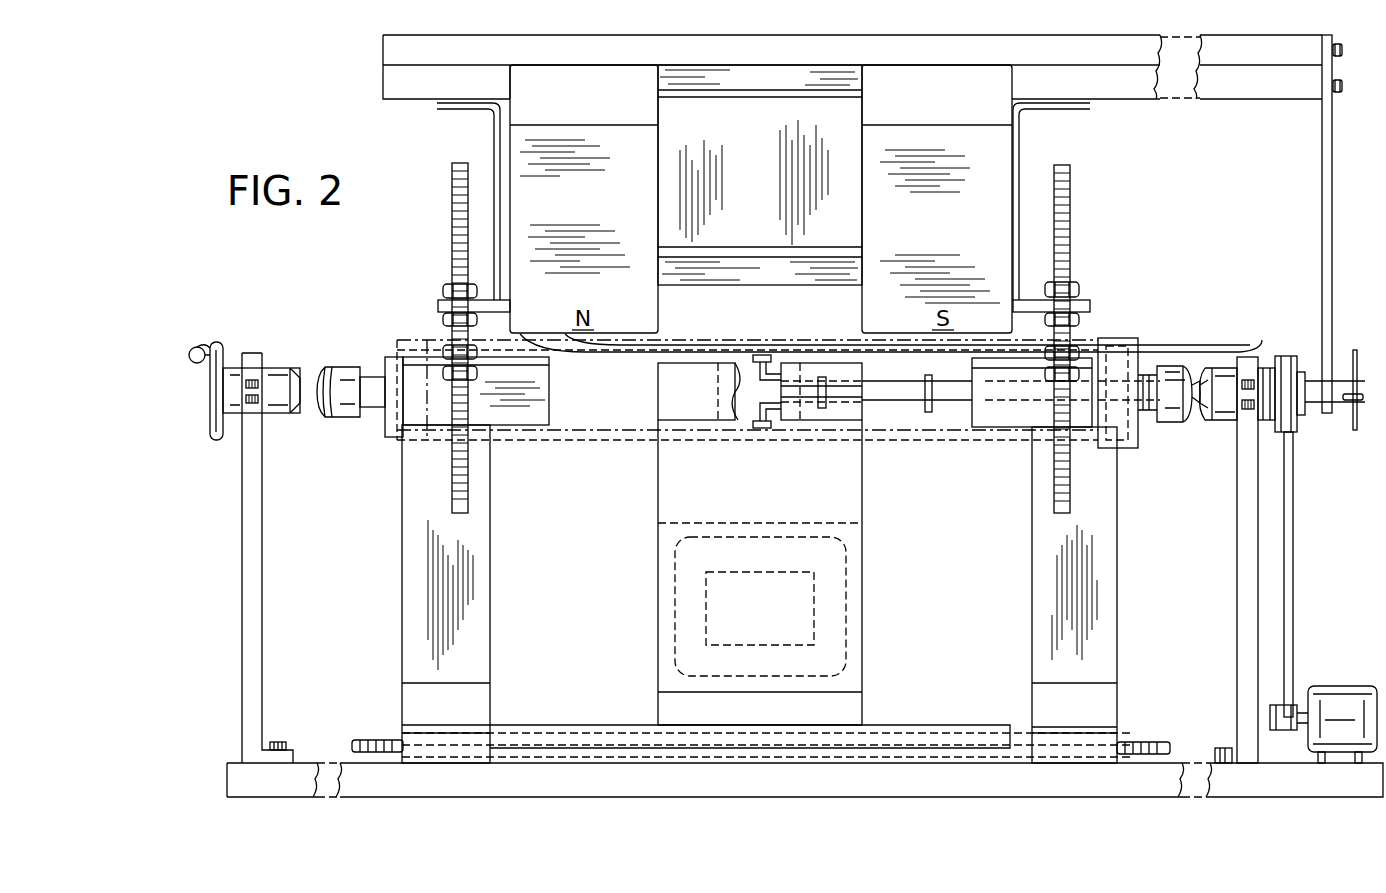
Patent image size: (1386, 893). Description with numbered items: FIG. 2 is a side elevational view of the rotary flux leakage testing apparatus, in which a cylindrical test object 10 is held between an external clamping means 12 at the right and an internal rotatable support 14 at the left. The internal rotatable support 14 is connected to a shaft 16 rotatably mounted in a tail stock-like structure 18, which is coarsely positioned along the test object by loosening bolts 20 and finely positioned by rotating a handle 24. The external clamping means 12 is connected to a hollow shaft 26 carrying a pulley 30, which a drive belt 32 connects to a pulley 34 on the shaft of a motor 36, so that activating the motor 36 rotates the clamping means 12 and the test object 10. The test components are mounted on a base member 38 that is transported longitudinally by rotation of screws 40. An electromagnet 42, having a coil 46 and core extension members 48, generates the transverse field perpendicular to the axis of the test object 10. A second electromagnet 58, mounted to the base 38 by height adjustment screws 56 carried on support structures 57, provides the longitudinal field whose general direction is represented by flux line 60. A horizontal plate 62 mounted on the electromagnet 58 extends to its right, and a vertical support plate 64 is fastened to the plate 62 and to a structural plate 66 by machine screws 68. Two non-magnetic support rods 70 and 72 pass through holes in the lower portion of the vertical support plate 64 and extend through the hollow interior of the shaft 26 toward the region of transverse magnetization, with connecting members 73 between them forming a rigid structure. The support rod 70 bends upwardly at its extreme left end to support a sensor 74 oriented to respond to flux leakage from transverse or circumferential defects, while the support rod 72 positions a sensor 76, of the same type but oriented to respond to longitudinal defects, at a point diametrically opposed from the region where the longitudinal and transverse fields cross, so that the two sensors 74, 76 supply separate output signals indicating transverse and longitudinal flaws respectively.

The test object 10 is at (937, 441).
The external clamping means 12 is at (1130, 338).
The internal rotatable support 14 is at (392, 424).
The shaft 16 is at (345, 367).
The structure 18 is at (258, 353).
The bolts 20 is at (281, 742).
The handle 24 is at (200, 347).
The shaft 26 is at (1207, 368).
The pulley 30 is at (1295, 436).
The drive belt 32 is at (1293, 546).
The pulley 34 is at (1275, 731).
The motor 36 is at (1340, 688).
The base member 38 is at (352, 768).
The screws 40 is at (380, 740).
The electromagnet 42 is at (658, 598).
The coil 46 is at (842, 656).
The core extension members 48 is at (862, 490).
The height adjustment screws 56 is at (452, 192).
The support structures 57 is at (492, 546).
The electromagnet 58 is at (720, 285).
The flux line 60 is at (639, 349).
The horizontal plate 62 is at (384, 46).
The vertical support plate 64 is at (1322, 200).
The structural plate 66 is at (1250, 100).
The machine screws 68 is at (1343, 50).
The support rod 70 is at (1343, 372).
The support rod 72 is at (1350, 412).
The connecting members 73 is at (926, 408).
The sensor 74 is at (752, 362).
The sensor 76 is at (752, 421).